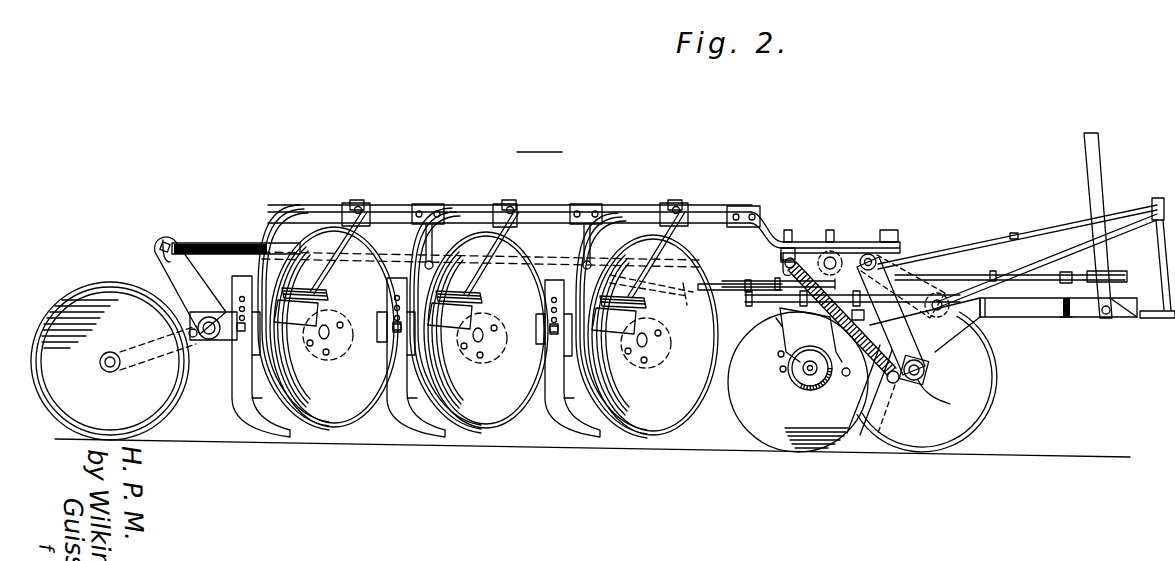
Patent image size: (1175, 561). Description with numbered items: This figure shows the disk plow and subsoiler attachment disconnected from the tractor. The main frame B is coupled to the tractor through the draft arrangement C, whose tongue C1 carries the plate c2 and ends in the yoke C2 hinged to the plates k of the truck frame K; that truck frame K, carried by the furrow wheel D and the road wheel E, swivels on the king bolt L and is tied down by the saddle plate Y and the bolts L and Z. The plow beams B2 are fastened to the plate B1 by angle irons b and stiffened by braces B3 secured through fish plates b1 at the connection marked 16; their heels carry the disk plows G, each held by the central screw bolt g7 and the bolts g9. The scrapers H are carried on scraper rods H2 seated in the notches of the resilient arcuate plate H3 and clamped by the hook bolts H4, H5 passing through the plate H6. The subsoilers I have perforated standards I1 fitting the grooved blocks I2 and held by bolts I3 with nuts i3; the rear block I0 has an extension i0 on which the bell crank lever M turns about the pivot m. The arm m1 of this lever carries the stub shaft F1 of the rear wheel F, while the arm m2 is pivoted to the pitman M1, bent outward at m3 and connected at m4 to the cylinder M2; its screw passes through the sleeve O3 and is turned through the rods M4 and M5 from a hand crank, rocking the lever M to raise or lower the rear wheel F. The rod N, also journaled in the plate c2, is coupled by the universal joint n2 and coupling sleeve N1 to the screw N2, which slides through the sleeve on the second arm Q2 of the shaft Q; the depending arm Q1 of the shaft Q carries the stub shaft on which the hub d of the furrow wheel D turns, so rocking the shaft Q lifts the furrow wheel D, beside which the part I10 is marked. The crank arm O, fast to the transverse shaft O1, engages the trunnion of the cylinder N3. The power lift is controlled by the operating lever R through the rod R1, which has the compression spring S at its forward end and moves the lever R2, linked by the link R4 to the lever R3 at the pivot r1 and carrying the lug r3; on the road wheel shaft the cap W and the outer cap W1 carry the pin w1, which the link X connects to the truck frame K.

The rear wheel F is at (75, 293).
The stub shaft F1 is at (108, 374).
The arm of bell crank lever m1 is at (126, 348).
The pivot m is at (194, 326).
The bell crank lever M is at (155, 268).
The rear wheel operating rod or pitman M1 is at (190, 240).
The arm of bell crank lever m2 is at (163, 261).
The outward bend of rod m3 is at (228, 243).
The rearward extension i0 is at (206, 320).
The block carrying rear standard I0 is at (218, 305).
The standard I1 is at (232, 380).
The subsoiler I is at (289, 440).
The block I2 is at (385, 384).
The bolt I3 is at (234, 340).
The main frame B is at (640, 205).
The plate of main frame B1 is at (865, 242).
The plow beam B2 is at (298, 205).
The brace B3 is at (433, 205).
The angle iron b is at (743, 205).
The angle iron or fish plate b1 is at (436, 210).
The cylinder M2 is at (762, 256).
The guide line 16 is at (573, 205).
The disk plow G is at (350, 431).
The central screw bolt of disk g7 is at (330, 345).
The disk bolt g9 is at (318, 361).
The nut i3 is at (392, 325).
The scraper H is at (330, 291).
The scraper rod H2 is at (366, 205).
The arcuate plate H3 is at (338, 212).
The hook bolt H4 is at (360, 205).
The hook bolt H5 is at (353, 205).
The plate H6 is at (506, 203).
The connection of rod to cylinder m4 is at (704, 292).
The saddle plate Y is at (729, 283).
The king bolt L is at (843, 242).
The bolt Z is at (789, 230).
The transverse shaft O1 is at (829, 256).
The sleeve O3 is at (779, 262).
The crank arm O is at (787, 278).
The cylinder N3 is at (765, 305).
The plate of truck frame k is at (878, 260).
The truck frame K is at (900, 250).
The shaft Q is at (895, 250).
The second arm of shaft Q Q2 is at (932, 268).
The rod M4 is at (940, 256).
The rod M5 is at (1028, 234).
The rod N is at (1045, 257).
The coupling sleeve N1 is at (993, 276).
The universal joint n2 is at (935, 292).
The rod or screw N2 is at (858, 306).
The rod R1 is at (1065, 275).
The coil spring S is at (1108, 268).
The operating lever R is at (1094, 140).
The plate c2 is at (1158, 195).
The draft arrangement C is at (1085, 318).
The tongue C1 is at (972, 322).
The yoke C2 is at (1050, 320).
The furrow wheel D is at (930, 455).
The depending arm of shaft Q Q1 is at (922, 376).
The hub of furrow wheel d is at (946, 396).
The link X is at (866, 385).
The guide arc I10 is at (897, 393).
The road wheel E is at (790, 452).
The cap W1 is at (803, 392).
The cap W is at (800, 372).
The pin w1 is at (827, 395).
The link R4 is at (815, 326).
The lever R3 is at (778, 324).
The lug r3 is at (778, 354).
The pivot r1 is at (780, 368).
The lever R2 is at (845, 376).